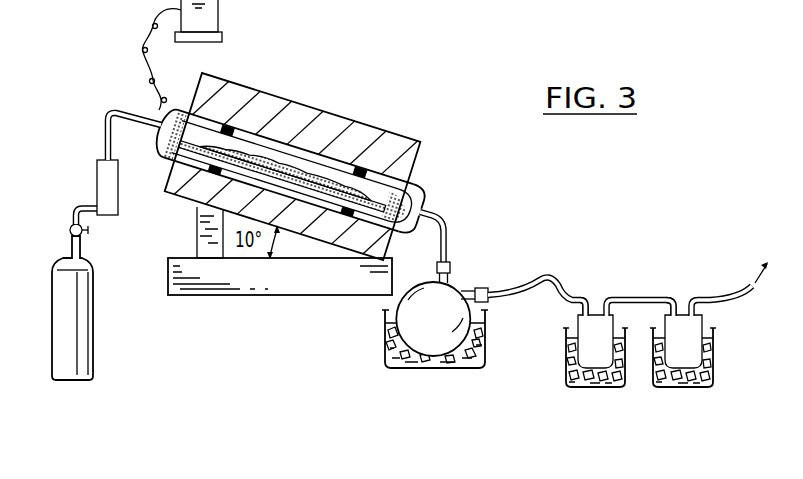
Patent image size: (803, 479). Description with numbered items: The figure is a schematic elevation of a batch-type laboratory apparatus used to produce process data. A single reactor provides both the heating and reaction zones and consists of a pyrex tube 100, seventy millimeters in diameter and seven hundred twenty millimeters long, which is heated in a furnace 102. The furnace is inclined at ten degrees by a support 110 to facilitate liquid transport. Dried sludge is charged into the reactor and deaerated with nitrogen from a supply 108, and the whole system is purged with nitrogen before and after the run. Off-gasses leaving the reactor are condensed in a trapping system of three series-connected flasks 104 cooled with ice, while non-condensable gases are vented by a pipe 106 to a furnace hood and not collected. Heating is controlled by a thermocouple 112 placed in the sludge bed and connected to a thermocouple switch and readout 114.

The pyrex tube 100 is at (398, 191).
The furnace 102 is at (370, 125).
The flasks 104 is at (430, 342).
The pipe 106 is at (733, 295).
The supply 108 is at (75, 333).
The support 110 is at (198, 242).
The thermocouple 112 is at (307, 170).
The thermocouple switch and readout 114 is at (210, 15).